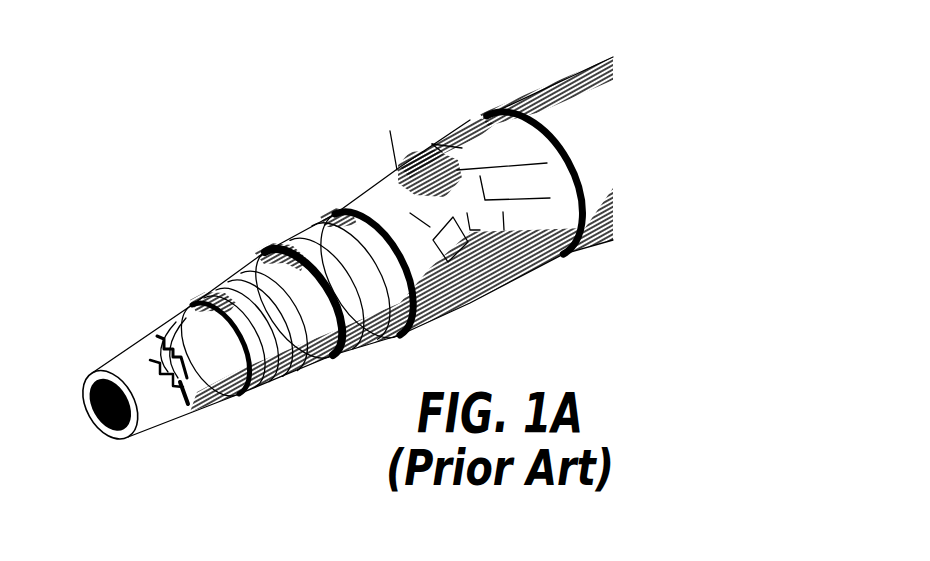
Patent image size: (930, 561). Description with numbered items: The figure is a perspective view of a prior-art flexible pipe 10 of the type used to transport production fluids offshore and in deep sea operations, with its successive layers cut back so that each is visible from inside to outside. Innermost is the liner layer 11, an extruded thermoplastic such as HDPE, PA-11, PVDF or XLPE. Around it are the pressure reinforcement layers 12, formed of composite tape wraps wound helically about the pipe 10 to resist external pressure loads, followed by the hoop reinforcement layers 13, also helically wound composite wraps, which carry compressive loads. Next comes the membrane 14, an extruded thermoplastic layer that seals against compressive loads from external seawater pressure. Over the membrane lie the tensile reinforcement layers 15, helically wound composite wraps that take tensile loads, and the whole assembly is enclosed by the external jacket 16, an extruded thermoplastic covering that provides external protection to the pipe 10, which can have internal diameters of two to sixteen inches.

The flexible pipe 10 is at (236, 156).
The liner layer 11 is at (104, 362).
The pressure reinforcement layers 12 is at (196, 292).
The hoop reinforcement layers 13 is at (281, 245).
The membrane 14 is at (331, 210).
The tensile reinforcement layers 15 is at (432, 144).
The external jacket 16 is at (540, 82).